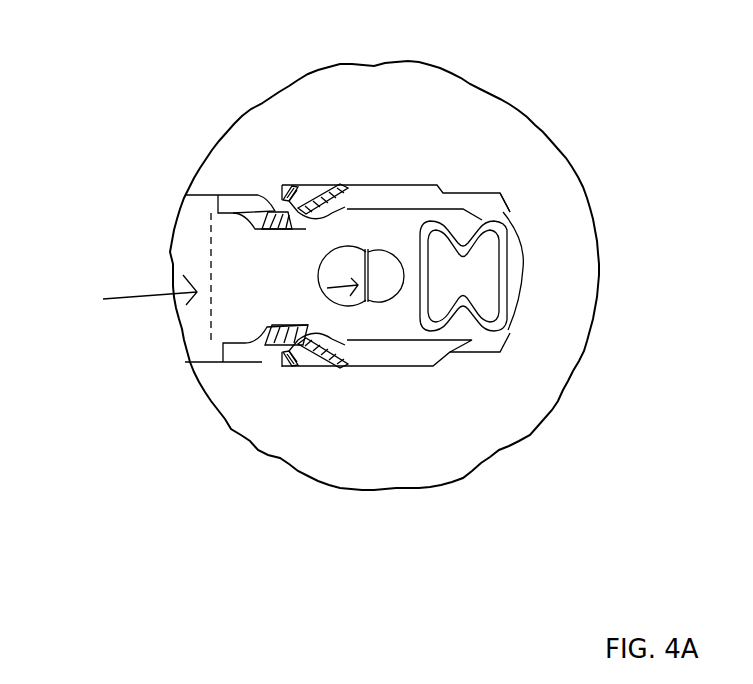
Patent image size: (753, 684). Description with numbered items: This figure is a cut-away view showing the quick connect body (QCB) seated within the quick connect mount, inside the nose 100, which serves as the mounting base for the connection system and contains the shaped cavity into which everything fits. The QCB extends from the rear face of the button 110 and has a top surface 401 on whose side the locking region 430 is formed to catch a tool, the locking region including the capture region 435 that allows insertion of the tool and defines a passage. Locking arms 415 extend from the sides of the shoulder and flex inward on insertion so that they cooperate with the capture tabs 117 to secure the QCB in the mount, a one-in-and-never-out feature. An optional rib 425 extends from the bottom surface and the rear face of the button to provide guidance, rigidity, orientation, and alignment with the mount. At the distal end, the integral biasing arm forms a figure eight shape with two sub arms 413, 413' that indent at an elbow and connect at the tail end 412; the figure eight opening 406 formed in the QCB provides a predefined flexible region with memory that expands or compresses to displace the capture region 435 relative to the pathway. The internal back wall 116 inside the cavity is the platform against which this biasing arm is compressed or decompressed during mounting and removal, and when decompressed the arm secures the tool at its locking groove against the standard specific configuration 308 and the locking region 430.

The nose 100 is at (528, 438).
The button 110 is at (173, 328).
The internal back wall 116 is at (512, 208).
The capture tabs 117 is at (271, 192).
The standard specific configuration 308 is at (327, 288).
The top surface 401 is at (281, 283).
The figure eight opening 406 is at (488, 273).
The tail end 412 is at (513, 295).
The sub arm 413 is at (464, 346).
The sub arm 413' is at (588, 204).
The locking arms 415 is at (315, 367).
The rib 425 is at (381, 268).
The locking region 430 is at (388, 300).
The capture region 435 is at (354, 247).